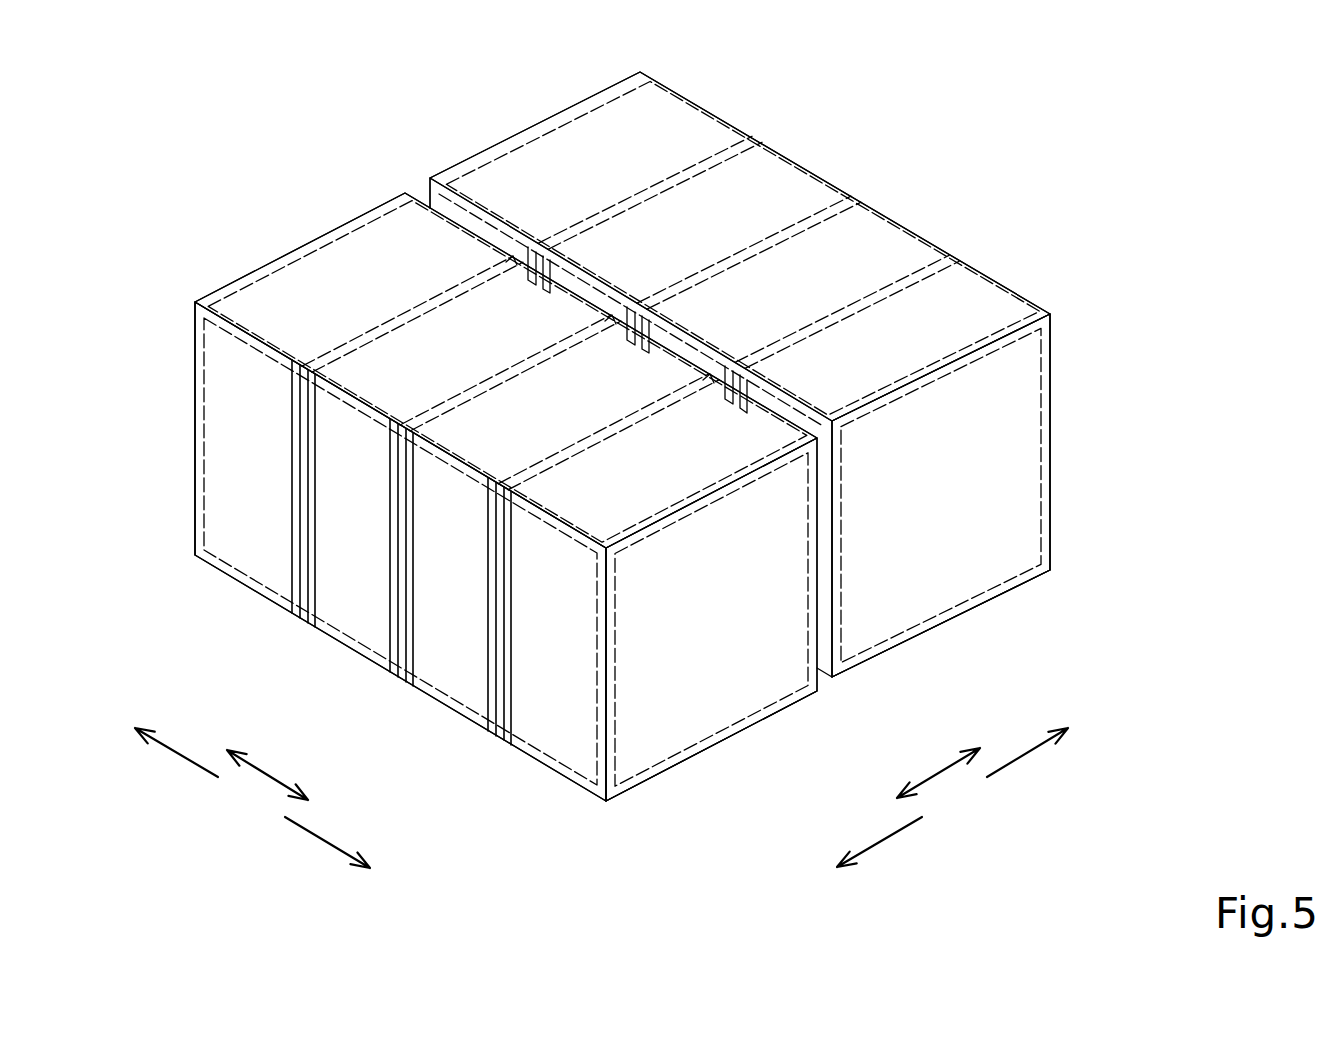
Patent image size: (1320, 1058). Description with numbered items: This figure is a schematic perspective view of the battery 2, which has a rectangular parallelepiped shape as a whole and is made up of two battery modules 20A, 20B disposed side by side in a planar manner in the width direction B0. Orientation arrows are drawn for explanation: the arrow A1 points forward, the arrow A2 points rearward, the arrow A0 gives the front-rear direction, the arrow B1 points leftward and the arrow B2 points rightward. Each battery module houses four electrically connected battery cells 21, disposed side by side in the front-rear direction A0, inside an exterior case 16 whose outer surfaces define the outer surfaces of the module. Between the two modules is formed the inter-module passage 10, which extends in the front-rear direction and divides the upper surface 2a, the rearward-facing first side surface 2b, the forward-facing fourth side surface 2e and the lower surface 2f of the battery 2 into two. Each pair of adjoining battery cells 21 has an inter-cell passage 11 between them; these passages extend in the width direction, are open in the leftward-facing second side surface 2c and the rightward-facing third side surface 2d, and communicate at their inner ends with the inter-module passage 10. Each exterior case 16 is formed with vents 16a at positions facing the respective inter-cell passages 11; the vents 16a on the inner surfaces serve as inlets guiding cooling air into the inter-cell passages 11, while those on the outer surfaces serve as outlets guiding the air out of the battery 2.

The battery 2 is at (295, 105).
The battery module 20A is at (251, 210).
The battery module 20B is at (497, 120).
The inter-module passage 10 is at (408, 173).
The upper surface 2a is at (273, 293).
The first side surface 2b is at (778, 662).
The second side surface 2c is at (230, 528).
The third side surface 2d is at (1053, 418).
The fourth side surface 2e is at (193, 375).
The lower surface 2f is at (572, 780).
The inter-cell passage 11 is at (753, 138).
The exterior case 16 is at (763, 720).
The vent 16a is at (553, 276).
The battery cell 21 is at (440, 298).
The arrow A0 is at (260, 775).
The arrow A1 is at (178, 762).
The arrow A2 is at (318, 838).
The arrow B0 is at (943, 773).
The arrow B1 is at (890, 843).
The arrow B2 is at (1023, 757).